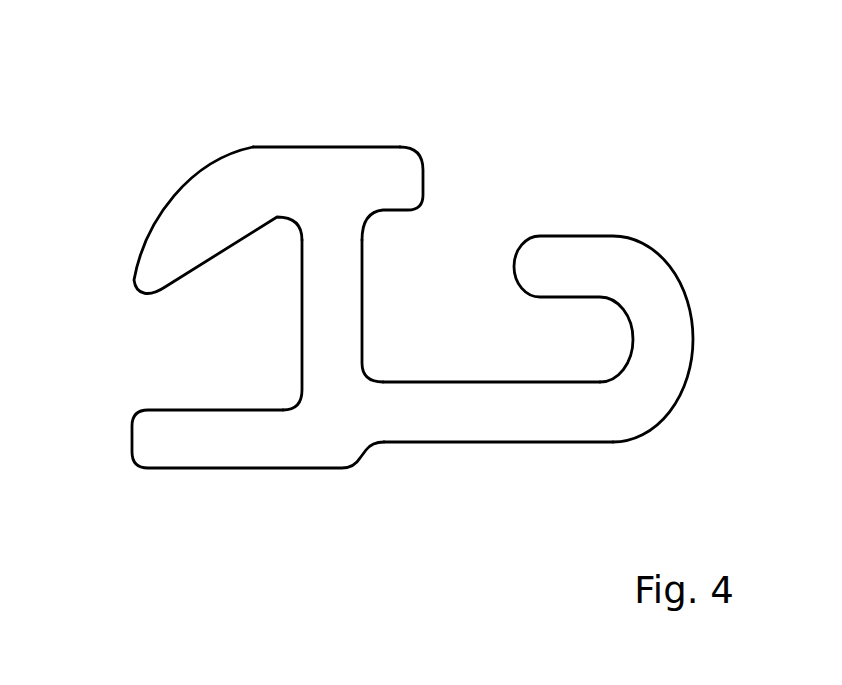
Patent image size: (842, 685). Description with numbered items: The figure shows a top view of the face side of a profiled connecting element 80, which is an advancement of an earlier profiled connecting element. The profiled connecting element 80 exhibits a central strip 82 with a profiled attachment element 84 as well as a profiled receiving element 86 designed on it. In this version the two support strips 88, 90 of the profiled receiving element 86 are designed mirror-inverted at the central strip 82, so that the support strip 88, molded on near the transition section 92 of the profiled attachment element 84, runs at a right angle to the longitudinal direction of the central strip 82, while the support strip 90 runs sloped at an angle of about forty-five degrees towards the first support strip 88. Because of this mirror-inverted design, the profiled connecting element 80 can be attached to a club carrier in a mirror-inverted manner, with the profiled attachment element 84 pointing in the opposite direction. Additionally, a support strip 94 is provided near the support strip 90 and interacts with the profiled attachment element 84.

The profiled connecting element 80 is at (533, 110).
The central strip 82 is at (310, 385).
The profiled attachment element 84 is at (673, 270).
The profiled receiving element 86 is at (140, 205).
The support strip 88 is at (208, 432).
The support strip 90 is at (273, 173).
The transition section 92 is at (498, 423).
The support strip 94 is at (383, 177).